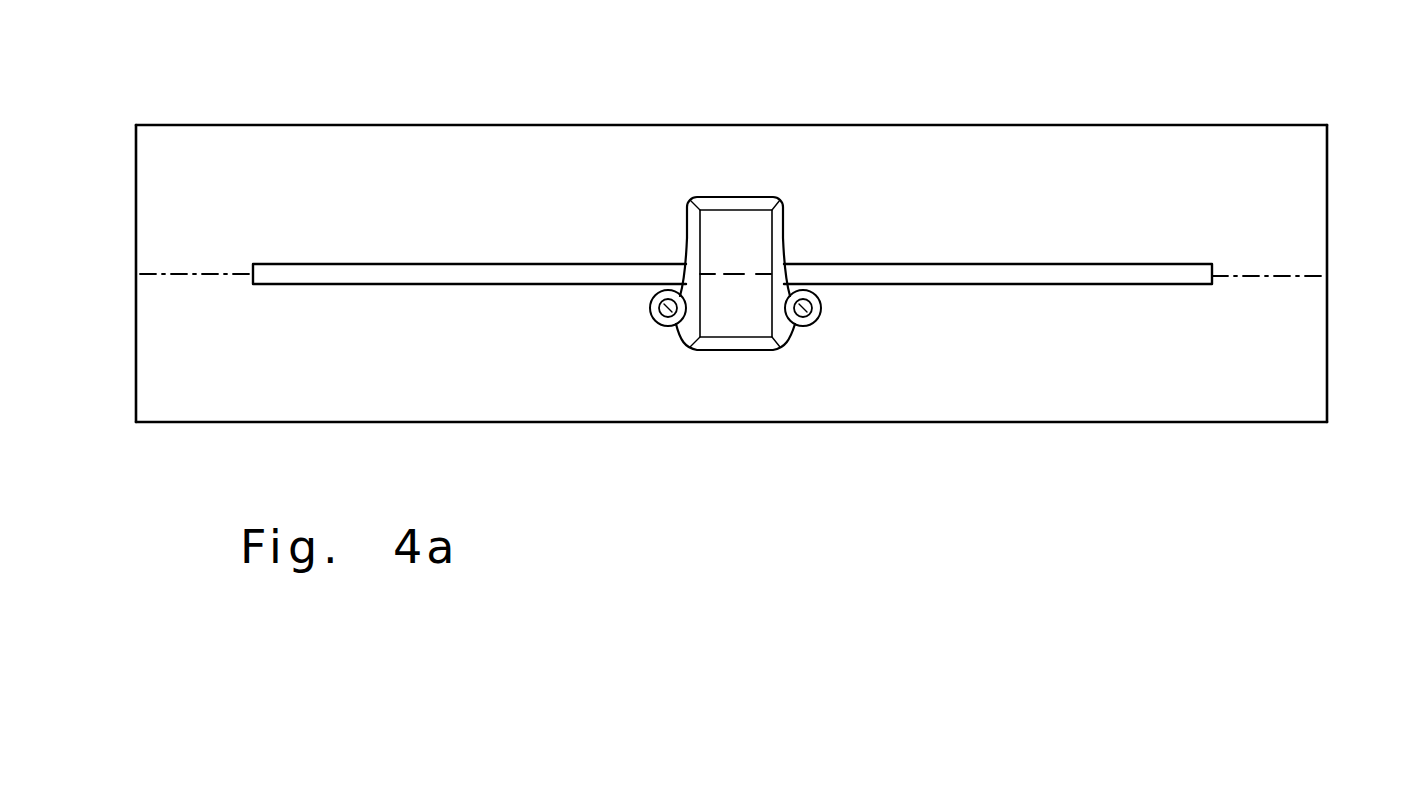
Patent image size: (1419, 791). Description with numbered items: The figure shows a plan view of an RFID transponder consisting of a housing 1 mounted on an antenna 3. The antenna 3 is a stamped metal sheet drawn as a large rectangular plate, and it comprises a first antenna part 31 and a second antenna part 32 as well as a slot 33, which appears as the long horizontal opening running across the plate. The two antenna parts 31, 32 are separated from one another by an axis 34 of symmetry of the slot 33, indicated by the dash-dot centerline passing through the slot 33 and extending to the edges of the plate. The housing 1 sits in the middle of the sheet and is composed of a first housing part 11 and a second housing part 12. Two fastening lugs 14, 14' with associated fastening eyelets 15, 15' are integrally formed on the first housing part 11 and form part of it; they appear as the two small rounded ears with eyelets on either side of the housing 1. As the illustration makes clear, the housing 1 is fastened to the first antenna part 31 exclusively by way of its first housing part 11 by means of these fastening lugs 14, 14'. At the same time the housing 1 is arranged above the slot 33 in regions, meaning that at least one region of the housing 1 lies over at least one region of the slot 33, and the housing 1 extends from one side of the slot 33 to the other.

The housing 1 is at (810, 218).
The antenna 3 is at (1344, 412).
The first housing part 11 is at (740, 325).
The second housing part 12 is at (736, 226).
The fastening lug 14 is at (819, 349).
The fastening lug 14' is at (652, 349).
The fastening eyelet 15 is at (858, 320).
The fastening eyelet 15' is at (612, 318).
The first antenna part 31 is at (1047, 400).
The second antenna part 32 is at (1030, 157).
The slot 33 is at (1061, 267).
The axis of symmetry 34 is at (1295, 278).